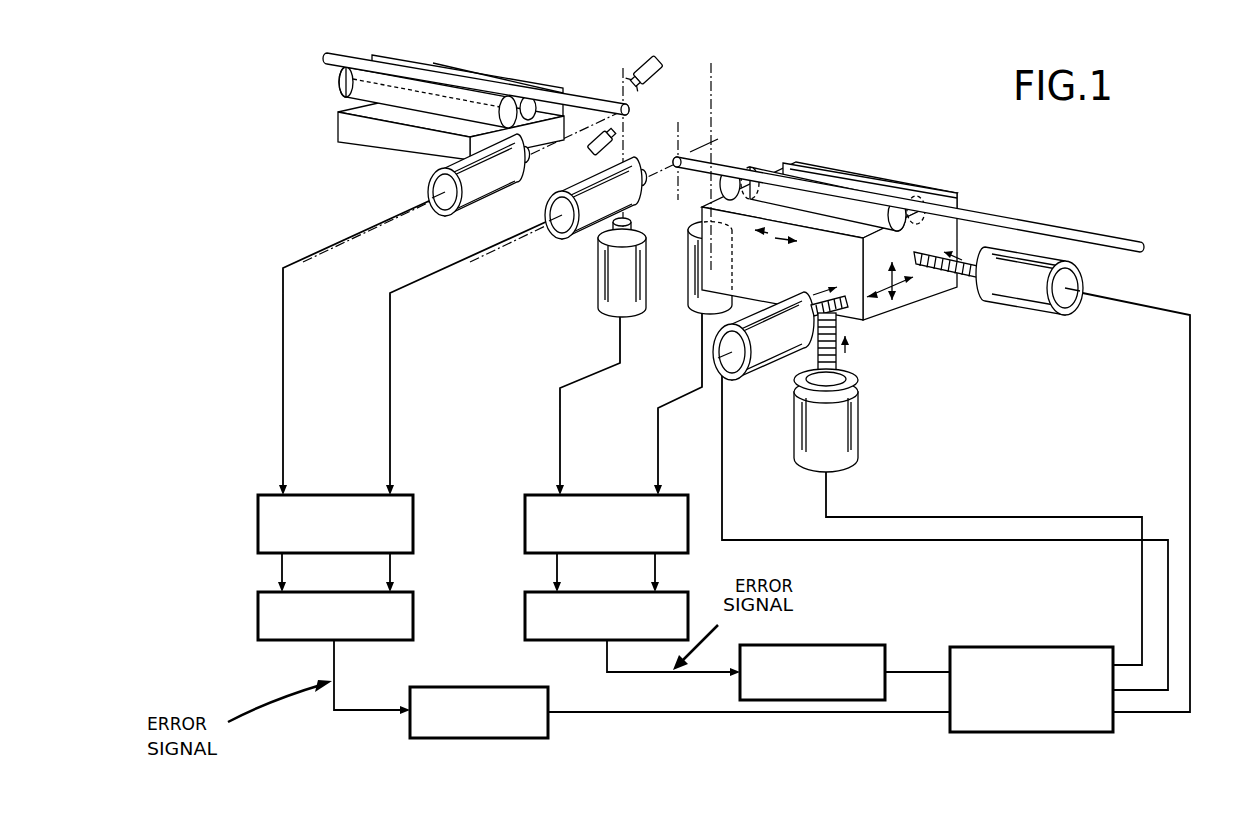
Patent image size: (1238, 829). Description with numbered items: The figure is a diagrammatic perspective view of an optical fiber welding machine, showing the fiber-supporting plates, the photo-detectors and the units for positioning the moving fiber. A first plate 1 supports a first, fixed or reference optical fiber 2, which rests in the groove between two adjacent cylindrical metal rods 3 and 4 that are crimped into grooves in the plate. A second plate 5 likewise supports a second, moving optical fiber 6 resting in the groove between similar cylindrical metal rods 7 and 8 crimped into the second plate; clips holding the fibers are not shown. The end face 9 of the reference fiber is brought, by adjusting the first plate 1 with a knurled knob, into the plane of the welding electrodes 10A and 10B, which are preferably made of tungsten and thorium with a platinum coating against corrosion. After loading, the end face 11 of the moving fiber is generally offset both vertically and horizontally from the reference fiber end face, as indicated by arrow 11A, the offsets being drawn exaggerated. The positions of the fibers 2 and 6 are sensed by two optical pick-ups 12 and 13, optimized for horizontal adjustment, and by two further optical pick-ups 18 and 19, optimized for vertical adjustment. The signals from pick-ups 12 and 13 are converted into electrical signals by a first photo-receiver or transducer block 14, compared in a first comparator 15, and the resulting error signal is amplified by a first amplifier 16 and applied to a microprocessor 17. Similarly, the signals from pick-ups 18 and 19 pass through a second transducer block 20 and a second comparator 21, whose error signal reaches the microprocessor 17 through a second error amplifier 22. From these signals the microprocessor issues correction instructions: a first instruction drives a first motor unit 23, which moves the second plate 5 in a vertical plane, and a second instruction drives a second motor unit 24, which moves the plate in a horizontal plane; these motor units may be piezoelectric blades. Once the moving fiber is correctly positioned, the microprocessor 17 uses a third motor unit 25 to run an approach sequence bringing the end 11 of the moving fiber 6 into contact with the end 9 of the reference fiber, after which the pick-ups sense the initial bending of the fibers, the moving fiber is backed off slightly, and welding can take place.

The first plate 1 is at (375, 135).
The first optical fiber 2 is at (330, 62).
The cylindrical metal rod 3 is at (340, 86).
The cylindrical metal rod 4 is at (536, 118).
The second plate 5 is at (913, 290).
The second optical fiber 6 is at (1034, 230).
The cylindrical metal rod 7 is at (832, 225).
The cylindrical metal rod 8 is at (918, 202).
The end face of the first fiber 9 is at (632, 116).
The welding electrode 10A is at (636, 76).
The welding electrode 10B is at (611, 140).
The end face of the moving fiber 11 is at (682, 168).
The arrow 11A is at (705, 132).
The optical pick-up 12 is at (492, 186).
The optical pick-up 13 is at (592, 237).
The first photo-receiver or transducer block 14 is at (262, 520).
The first comparator 15 is at (262, 617).
The first amplifier 16 is at (452, 700).
The microprocessor 17 is at (1028, 663).
The optical pick-up 18 is at (610, 296).
The optical pick-up 19 is at (692, 290).
The second photo-receiver or transducer block 20 is at (528, 520).
The second comparator 21 is at (528, 617).
The second error amplifier 22 is at (813, 660).
The first motor unit 23 is at (846, 424).
The second motor unit 24 is at (773, 363).
The third motor unit 25 is at (1026, 298).